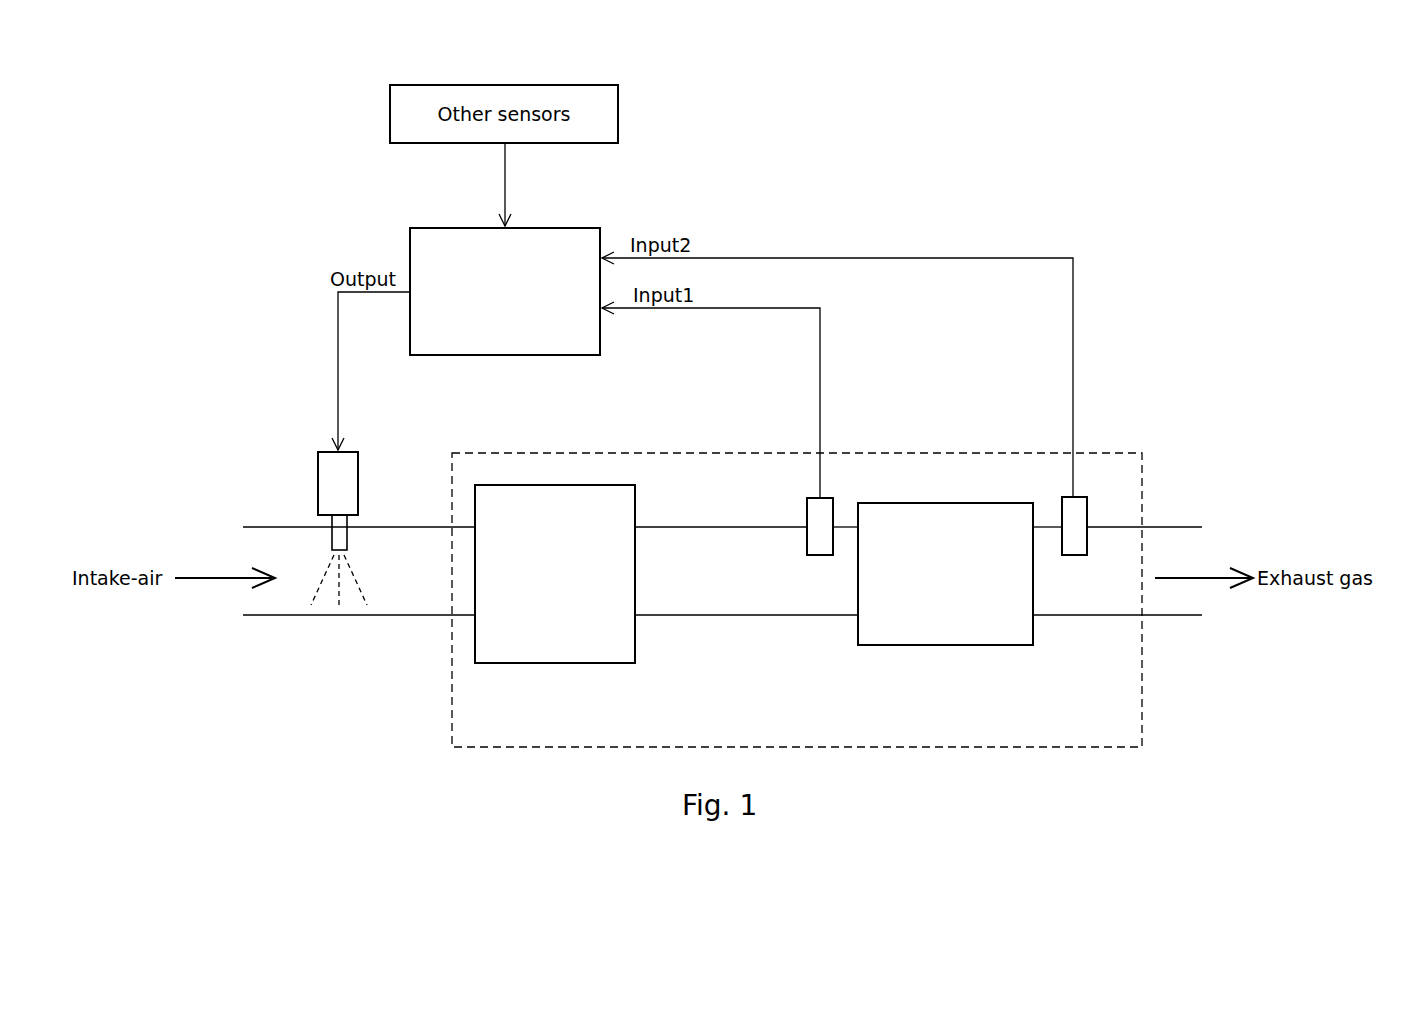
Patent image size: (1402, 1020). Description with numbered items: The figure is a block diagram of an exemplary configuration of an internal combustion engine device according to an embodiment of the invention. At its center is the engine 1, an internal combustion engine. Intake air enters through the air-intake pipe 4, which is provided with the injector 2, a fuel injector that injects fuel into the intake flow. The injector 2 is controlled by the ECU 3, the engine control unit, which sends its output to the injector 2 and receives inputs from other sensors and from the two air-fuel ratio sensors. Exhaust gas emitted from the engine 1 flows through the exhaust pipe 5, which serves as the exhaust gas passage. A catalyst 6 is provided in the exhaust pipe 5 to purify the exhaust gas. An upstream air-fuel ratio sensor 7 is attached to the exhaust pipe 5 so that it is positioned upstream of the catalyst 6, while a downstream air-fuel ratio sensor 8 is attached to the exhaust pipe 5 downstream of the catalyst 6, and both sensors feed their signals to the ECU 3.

The engine 1 is at (558, 485).
The injector 2 is at (359, 464).
The ECU 3 is at (580, 228).
The air-intake pipe 4 is at (379, 617).
The exhaust pipe 5 is at (763, 617).
The catalyst 6 is at (950, 503).
The upstream air-fuel ratio sensor 7 is at (833, 497).
The downstream air-fuel ratio sensor 8 is at (1080, 497).